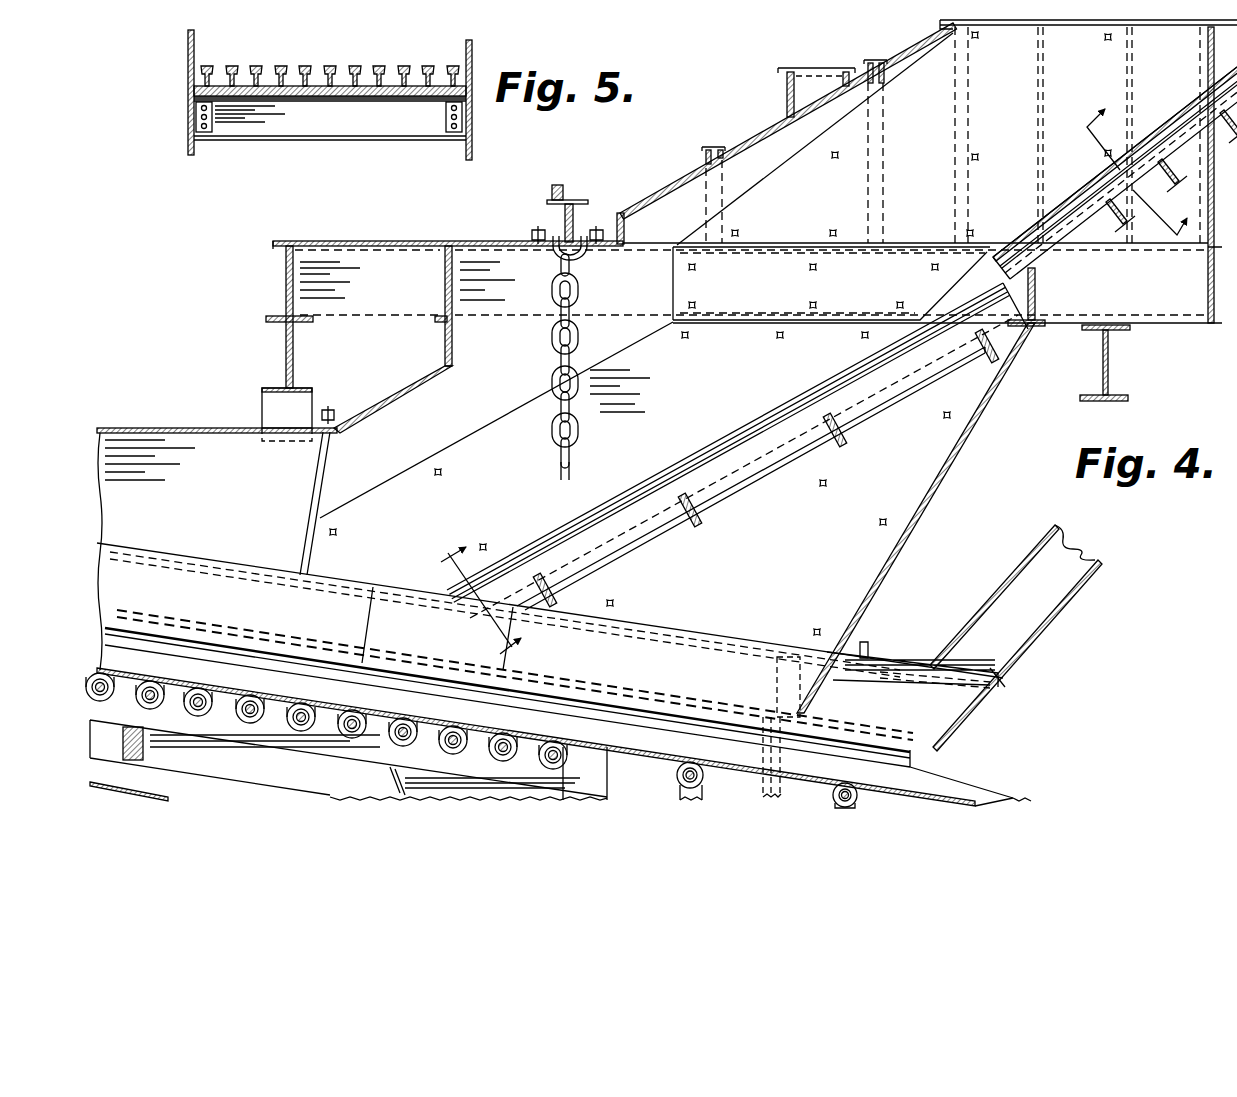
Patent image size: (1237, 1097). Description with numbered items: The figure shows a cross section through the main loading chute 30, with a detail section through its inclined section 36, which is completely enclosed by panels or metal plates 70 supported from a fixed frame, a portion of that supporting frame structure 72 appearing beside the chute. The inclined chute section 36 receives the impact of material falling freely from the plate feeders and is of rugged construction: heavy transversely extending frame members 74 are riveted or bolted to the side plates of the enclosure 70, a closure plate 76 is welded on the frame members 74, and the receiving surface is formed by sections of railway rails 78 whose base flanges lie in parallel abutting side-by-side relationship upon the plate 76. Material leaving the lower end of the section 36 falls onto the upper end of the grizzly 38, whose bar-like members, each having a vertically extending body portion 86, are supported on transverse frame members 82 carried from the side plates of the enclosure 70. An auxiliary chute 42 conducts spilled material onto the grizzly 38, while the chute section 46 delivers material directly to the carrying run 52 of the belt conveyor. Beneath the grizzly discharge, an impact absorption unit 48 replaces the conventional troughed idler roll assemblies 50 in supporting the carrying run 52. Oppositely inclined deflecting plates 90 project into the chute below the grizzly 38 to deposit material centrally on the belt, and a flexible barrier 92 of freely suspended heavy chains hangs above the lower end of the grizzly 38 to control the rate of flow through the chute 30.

In FIG. 4, the main loading chute 30 is at (1024, 80).
In FIG. 5, the inclined chute section 36 is at (319, 67).
In FIG. 4, the inclined chute section 36 is at (1115, 175).
In FIG. 4, the grizzly 38 is at (737, 450).
In FIG. 4, the auxiliary chute 42 is at (787, 87).
In FIG. 4, the chute section 46 is at (1011, 577).
In FIG. 4, the impact absorption unit 48 is at (273, 711).
In FIG. 4, the troughed idler roll assembly 50 is at (706, 784).
In FIG. 4, the carrying run 52 is at (934, 781).
In FIG. 5, the enclosure panels 70 is at (479, 51).
In FIG. 4, the enclosure panels 70 is at (735, 146).
In FIG. 4, the support column 72 is at (1042, 306).
In FIG. 5, the transverse frame member 74 is at (323, 121).
In FIG. 4, the transverse frame member 74 is at (1168, 178).
In FIG. 5, the closure plate 76 is at (392, 99).
In FIG. 4, the closure plate 76 is at (1063, 241).
In FIG. 5, the railway rail 78 is at (448, 66).
In FIG. 4, the railway rail 78 is at (1153, 128).
In FIG. 4, the transverse frame member 82 is at (978, 344).
In FIG. 4, the body portion 86 is at (648, 494).
In FIG. 4, the deflecting plate 90 is at (419, 634).
In FIG. 4, the flexible barrier 92 is at (550, 369).